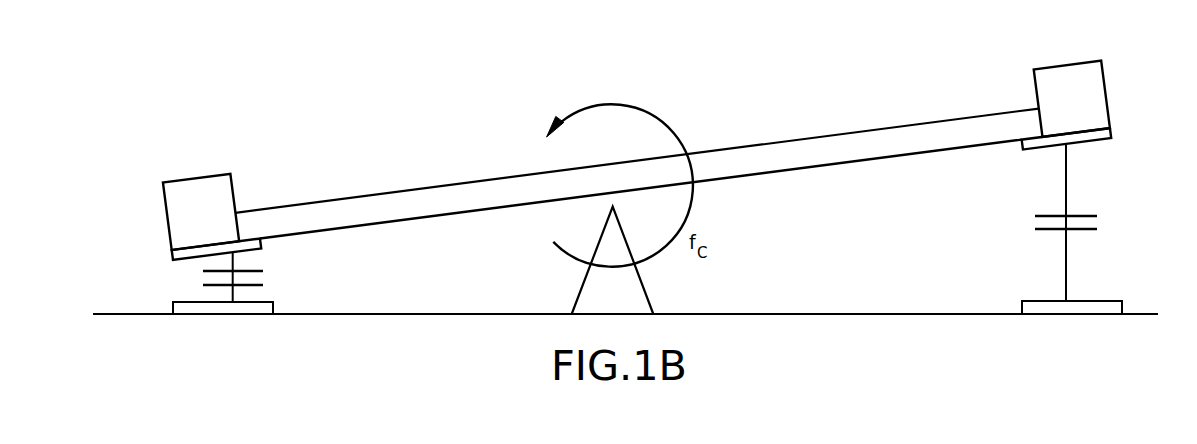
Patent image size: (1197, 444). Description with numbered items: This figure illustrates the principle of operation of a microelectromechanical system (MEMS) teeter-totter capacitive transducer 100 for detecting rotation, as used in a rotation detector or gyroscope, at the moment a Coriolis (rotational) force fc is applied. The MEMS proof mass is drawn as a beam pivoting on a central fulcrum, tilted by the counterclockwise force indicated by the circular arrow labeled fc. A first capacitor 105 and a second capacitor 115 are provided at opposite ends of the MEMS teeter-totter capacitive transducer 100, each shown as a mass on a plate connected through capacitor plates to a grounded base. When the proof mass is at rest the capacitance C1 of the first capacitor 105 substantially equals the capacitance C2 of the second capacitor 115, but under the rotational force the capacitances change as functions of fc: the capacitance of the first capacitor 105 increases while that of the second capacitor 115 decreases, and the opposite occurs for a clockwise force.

The MEMS teeter-totter capacitive transducer 100 is at (1162, 56).
The first capacitor 105 is at (149, 260).
The second capacitor 115 is at (1128, 197).